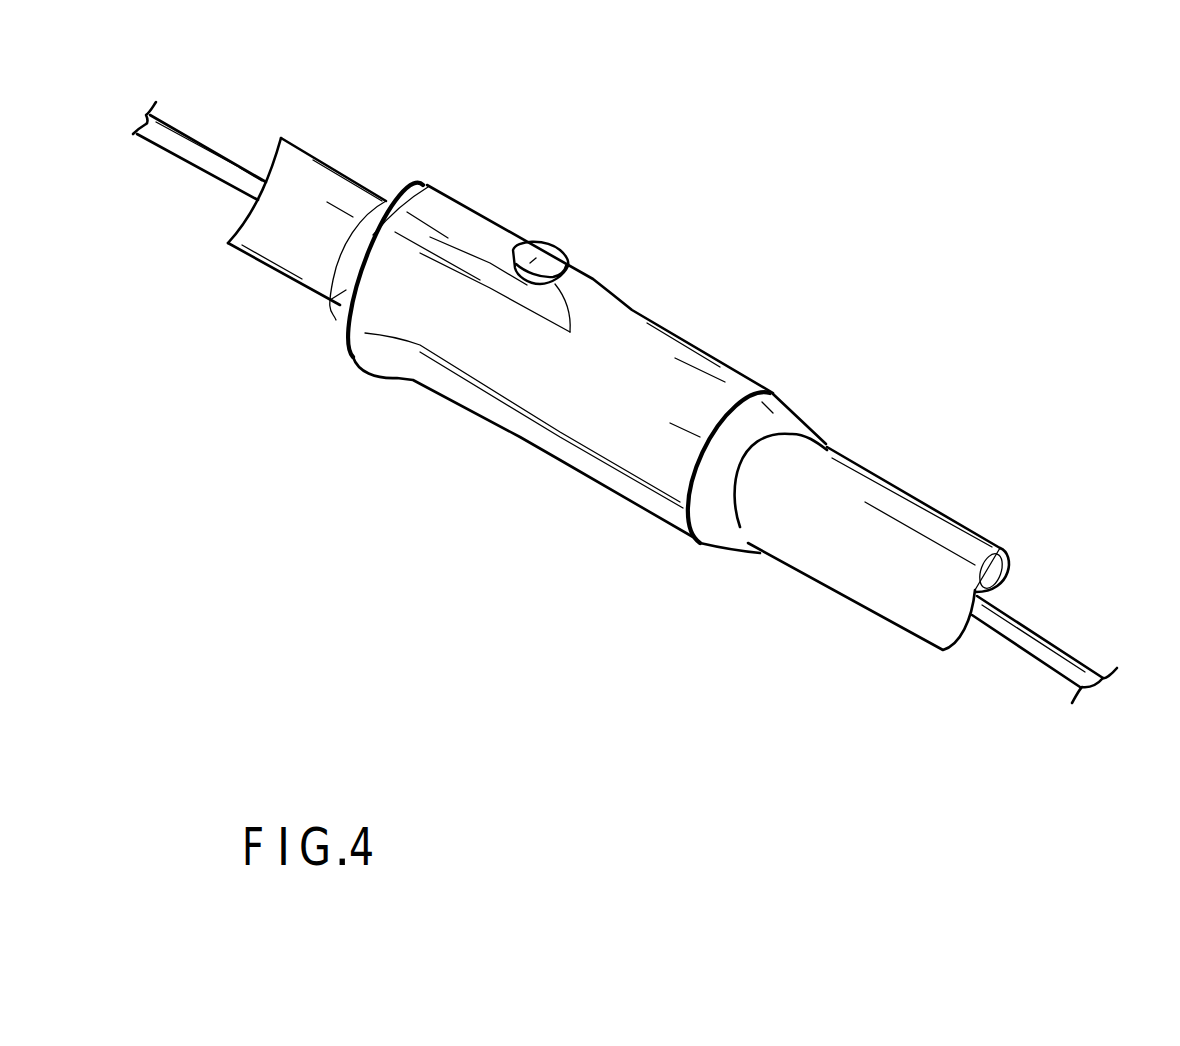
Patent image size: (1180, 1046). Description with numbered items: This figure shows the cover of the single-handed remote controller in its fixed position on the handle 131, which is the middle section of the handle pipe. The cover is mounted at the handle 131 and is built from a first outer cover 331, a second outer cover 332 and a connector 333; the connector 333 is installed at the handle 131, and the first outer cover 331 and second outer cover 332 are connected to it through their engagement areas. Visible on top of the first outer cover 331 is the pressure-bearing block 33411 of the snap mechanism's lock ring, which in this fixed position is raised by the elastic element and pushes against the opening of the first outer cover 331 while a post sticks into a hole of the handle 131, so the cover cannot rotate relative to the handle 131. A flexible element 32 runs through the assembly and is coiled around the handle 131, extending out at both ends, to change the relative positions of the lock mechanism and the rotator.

The flexible element 32 is at (200, 153).
The connector 333 is at (333, 300).
The second outer cover 332 is at (498, 432).
The first outer cover 331 is at (687, 362).
The pressure-bearing block 33411 is at (547, 258).
The handle 131 is at (840, 570).